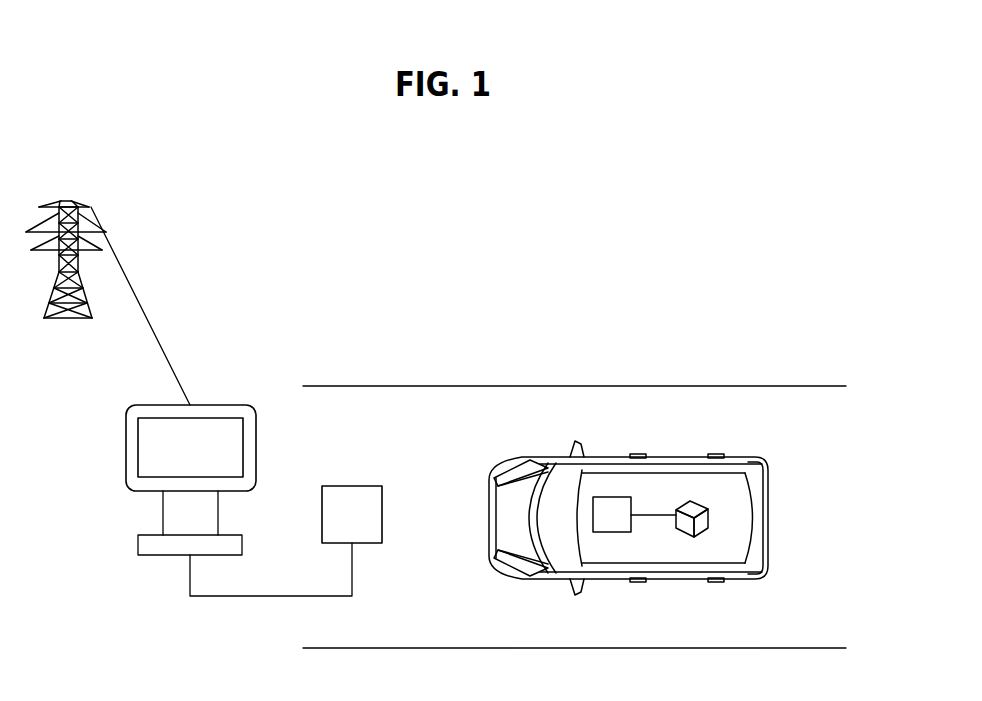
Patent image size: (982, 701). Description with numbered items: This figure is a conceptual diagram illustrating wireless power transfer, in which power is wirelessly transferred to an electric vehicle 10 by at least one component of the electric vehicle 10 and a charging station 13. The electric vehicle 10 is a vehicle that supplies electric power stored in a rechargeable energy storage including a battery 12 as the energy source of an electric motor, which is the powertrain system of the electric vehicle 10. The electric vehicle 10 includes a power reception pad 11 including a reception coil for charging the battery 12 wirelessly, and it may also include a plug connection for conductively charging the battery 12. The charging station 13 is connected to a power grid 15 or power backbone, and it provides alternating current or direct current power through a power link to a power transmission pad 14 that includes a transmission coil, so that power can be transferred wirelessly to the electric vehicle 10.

The electric vehicle 10 is at (648, 458).
The power reception pad 11 is at (613, 497).
The battery 12 is at (691, 501).
The charging station 13 is at (214, 405).
The power transmission pad 14 is at (351, 486).
The power grid 15 is at (65, 202).